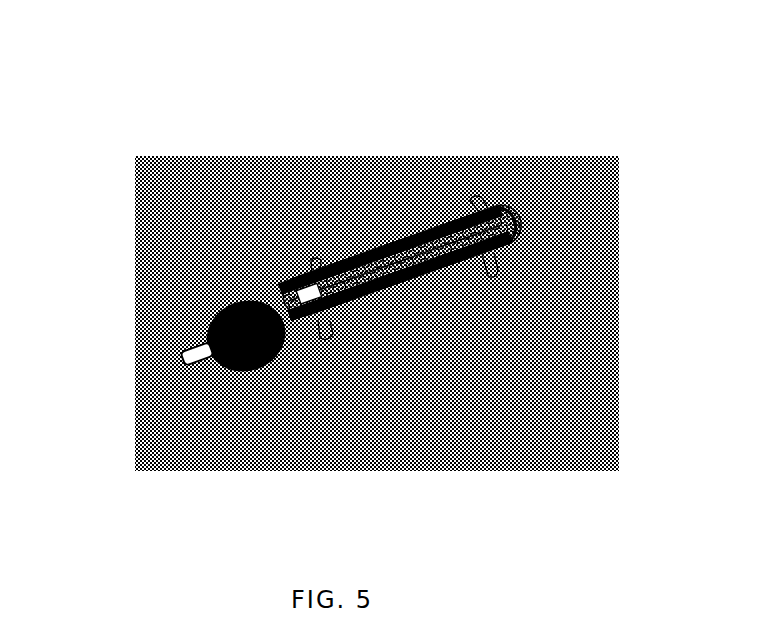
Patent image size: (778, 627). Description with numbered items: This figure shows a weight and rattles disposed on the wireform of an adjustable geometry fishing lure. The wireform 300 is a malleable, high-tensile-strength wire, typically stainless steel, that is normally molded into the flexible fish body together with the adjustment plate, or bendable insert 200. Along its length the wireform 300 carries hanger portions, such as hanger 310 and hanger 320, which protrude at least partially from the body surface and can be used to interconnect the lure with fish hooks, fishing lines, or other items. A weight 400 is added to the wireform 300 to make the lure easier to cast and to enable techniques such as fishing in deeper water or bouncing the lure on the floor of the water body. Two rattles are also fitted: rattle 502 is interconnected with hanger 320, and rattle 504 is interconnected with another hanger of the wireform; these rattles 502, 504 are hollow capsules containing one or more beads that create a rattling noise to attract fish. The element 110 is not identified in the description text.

The end portion 110 is at (498, 200).
The bendable insert 200 is at (513, 206).
The wireform 300 is at (497, 256).
The hanger portion 310 is at (177, 347).
The hanger portion 320 is at (291, 283).
The weight 400 is at (260, 367).
The rattle 502 is at (311, 264).
The rattle 504 is at (470, 196).